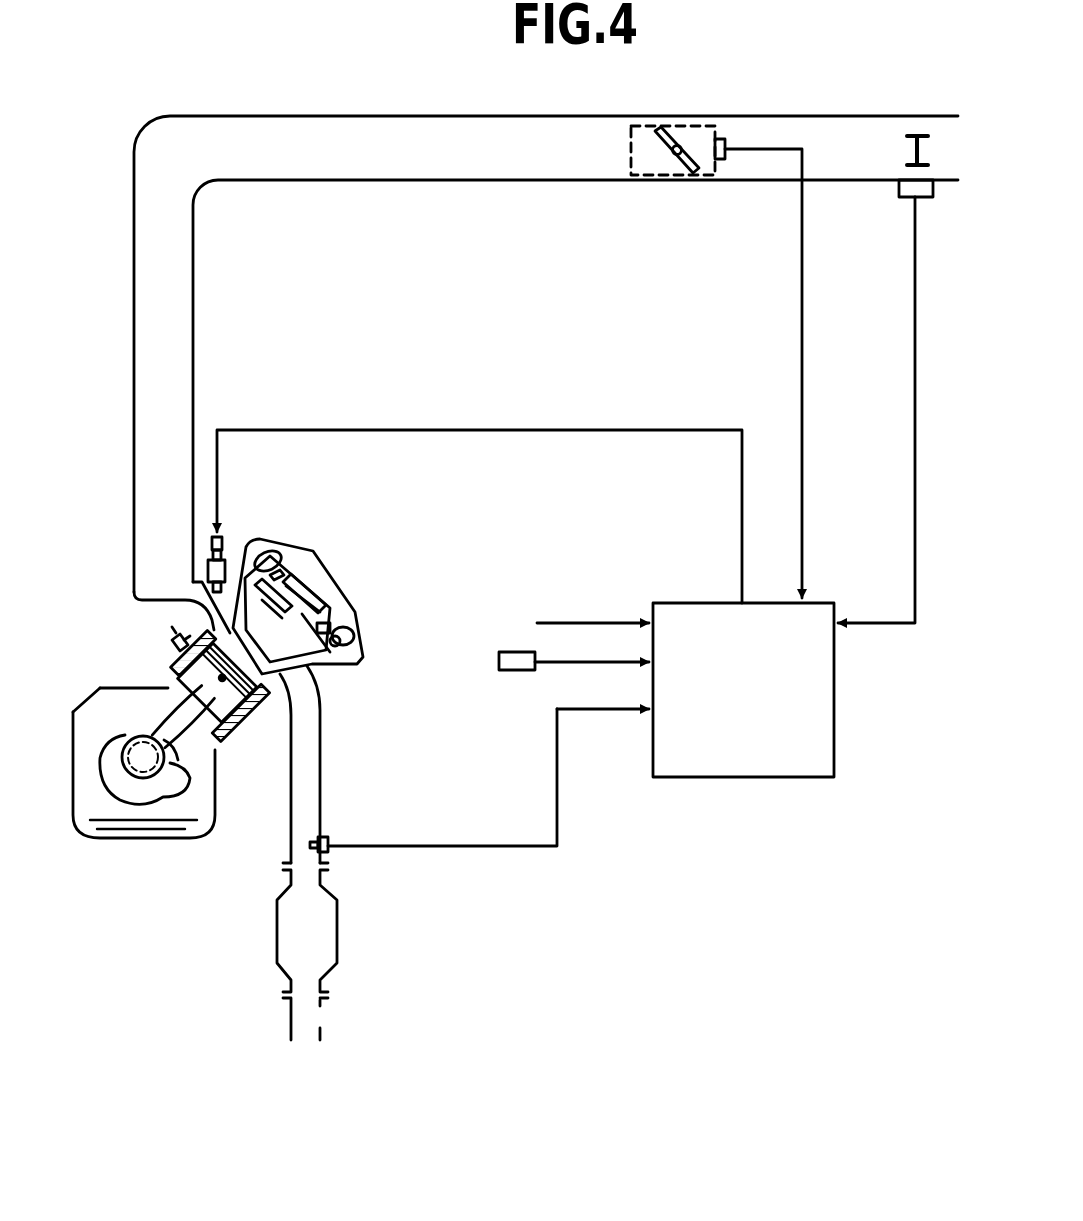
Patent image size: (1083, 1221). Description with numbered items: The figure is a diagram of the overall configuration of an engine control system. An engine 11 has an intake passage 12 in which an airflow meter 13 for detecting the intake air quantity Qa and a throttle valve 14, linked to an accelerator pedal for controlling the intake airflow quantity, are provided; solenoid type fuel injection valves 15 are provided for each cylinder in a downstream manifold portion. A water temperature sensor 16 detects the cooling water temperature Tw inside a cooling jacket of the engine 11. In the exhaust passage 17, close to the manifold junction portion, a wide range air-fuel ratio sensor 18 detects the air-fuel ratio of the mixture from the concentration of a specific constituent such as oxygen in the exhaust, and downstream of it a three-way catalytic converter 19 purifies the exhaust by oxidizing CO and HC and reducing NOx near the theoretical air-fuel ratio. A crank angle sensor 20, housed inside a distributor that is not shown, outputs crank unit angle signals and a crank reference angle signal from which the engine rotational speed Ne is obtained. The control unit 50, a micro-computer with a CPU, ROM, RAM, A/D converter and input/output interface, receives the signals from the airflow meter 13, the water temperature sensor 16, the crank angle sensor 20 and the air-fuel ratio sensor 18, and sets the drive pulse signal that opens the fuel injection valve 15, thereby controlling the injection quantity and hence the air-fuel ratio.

The engine 11 is at (337, 566).
The intake passage 12 is at (134, 268).
The airflow meter 13 is at (926, 198).
The throttle valve 14 is at (670, 125).
The fuel injection valve 15 is at (223, 530).
The water temperature sensor 16 is at (172, 644).
The exhaust passage 17 is at (291, 763).
The wide range air-fuel ratio sensor 18 is at (332, 852).
The three-way catalytic converter 19 is at (338, 931).
The crank angle sensor 20 is at (511, 671).
The control unit 50 is at (836, 738).